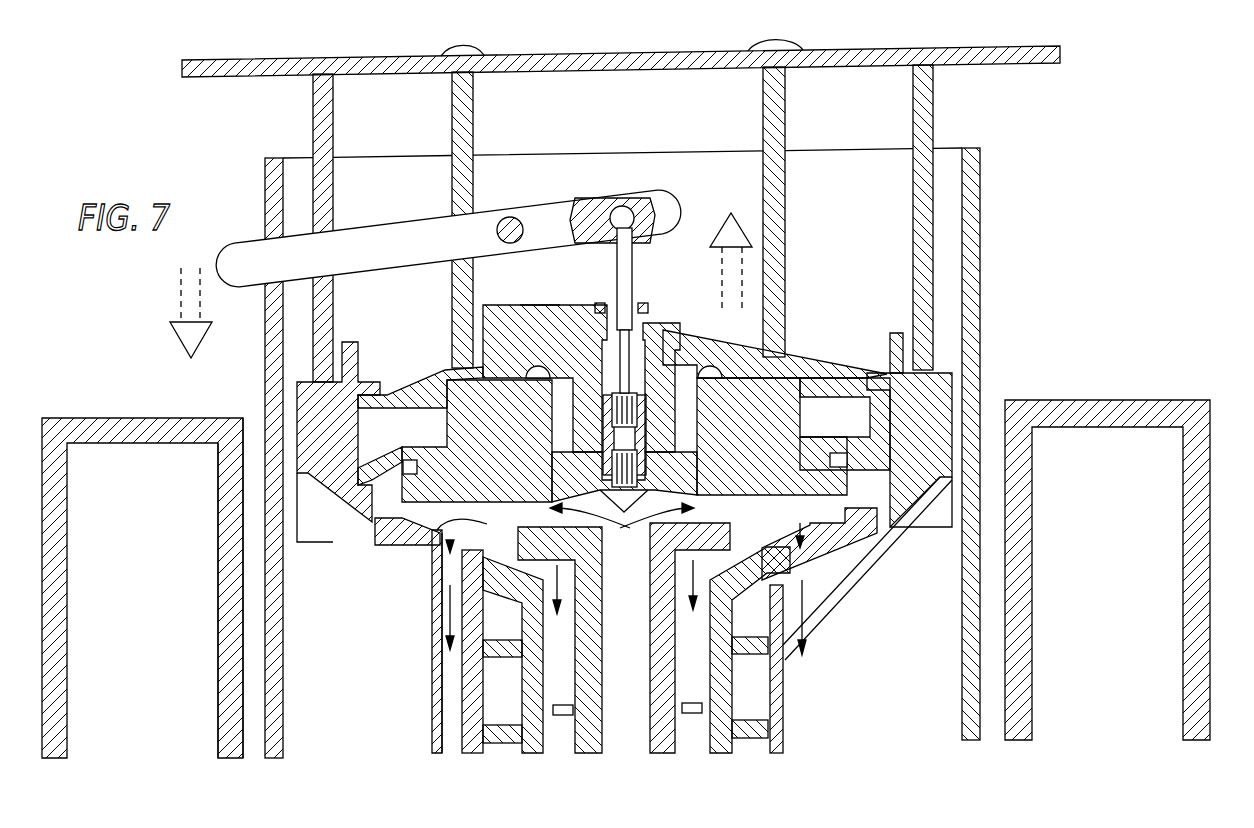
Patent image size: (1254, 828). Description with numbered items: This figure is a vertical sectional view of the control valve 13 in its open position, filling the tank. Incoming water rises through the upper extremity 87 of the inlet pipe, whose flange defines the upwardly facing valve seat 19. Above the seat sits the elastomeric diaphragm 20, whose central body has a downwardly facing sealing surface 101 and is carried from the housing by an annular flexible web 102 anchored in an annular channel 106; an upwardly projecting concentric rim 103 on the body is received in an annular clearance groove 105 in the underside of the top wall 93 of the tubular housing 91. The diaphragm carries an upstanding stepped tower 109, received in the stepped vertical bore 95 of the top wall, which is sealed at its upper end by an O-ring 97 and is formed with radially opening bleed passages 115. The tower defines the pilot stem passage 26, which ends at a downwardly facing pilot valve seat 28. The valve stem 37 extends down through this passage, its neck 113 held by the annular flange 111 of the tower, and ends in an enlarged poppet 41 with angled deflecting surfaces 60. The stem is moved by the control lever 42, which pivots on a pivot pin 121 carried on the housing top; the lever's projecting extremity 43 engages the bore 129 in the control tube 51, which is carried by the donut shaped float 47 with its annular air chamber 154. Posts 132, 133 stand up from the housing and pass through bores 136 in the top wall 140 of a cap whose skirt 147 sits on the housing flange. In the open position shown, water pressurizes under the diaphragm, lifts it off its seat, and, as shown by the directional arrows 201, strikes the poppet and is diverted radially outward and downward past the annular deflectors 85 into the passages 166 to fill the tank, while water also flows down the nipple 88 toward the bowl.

The control valve 13 is at (876, 560).
The valve seat 19 is at (543, 527).
The diaphragm 20 is at (396, 485).
The pilot stem passage 26 is at (533, 390).
The pilot valve seat 28 is at (590, 506).
The valve stem 37 is at (655, 246).
The poppet 41 is at (657, 506).
The control lever 42 is at (412, 240).
The projecting extremity 43 is at (222, 256).
The float 47 is at (110, 412).
The control tube 51 is at (992, 237).
The deflecting surfaces 60 is at (648, 512).
The annular deflectors 85 is at (735, 742).
The upper extremity 87 is at (672, 728).
The nipple 88 is at (432, 718).
The tubular housing 91 is at (963, 400).
The top wall 93 is at (800, 357).
The stepped vertical bore 95 is at (650, 328).
The O-ring 97 is at (638, 306).
The sealing surface 101 is at (437, 507).
The flexible web 102 is at (878, 505).
The concentric rim 103 is at (458, 390).
The annular clearance groove 105 is at (792, 390).
The annular channel 106 is at (893, 402).
The stepped tower 109 is at (655, 373).
The annular flange 111 is at (616, 345).
The neck 113 is at (540, 310).
The bleed passages 115 is at (597, 345).
The pivot pin 121 is at (512, 218).
The bore 129 is at (268, 310).
The post 132 is at (468, 106).
The post 133 is at (783, 100).
The bores 136 is at (720, 53).
The top wall 140 is at (513, 54).
The skirt 147 is at (933, 118).
The annular air chamber 154 is at (218, 598).
The passages 166 is at (563, 703).
The directional arrows 201 is at (397, 523).